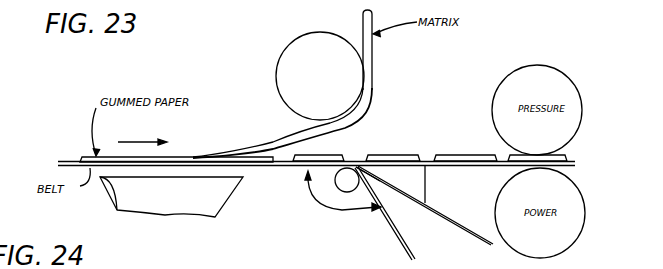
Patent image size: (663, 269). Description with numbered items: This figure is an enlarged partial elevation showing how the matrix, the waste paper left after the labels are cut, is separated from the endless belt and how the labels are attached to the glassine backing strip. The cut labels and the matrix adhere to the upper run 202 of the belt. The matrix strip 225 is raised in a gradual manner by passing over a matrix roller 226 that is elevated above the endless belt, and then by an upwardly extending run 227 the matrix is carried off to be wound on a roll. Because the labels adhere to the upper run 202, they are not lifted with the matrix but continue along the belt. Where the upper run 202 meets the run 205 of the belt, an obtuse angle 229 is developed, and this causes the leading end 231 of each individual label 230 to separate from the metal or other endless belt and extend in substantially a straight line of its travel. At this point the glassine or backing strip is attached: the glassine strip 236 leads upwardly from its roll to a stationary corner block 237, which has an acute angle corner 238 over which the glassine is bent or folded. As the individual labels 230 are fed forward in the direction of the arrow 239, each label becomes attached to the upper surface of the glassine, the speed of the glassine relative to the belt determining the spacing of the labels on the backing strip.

The upper run 202 is at (70, 161).
The run of the belt 205 is at (396, 233).
The matrix strip 225 is at (295, 129).
The matrix roller 226 is at (308, 45).
The upwardly extending run 227 is at (363, 14).
The obtuse angle of the belt 229 is at (337, 206).
The individual label 230 is at (322, 156).
The leading end 231 is at (360, 167).
The strip 236 is at (453, 223).
The stationary corner block 237 is at (407, 180).
The acute angle corner 238 is at (374, 168).
The arrow 239 is at (148, 142).